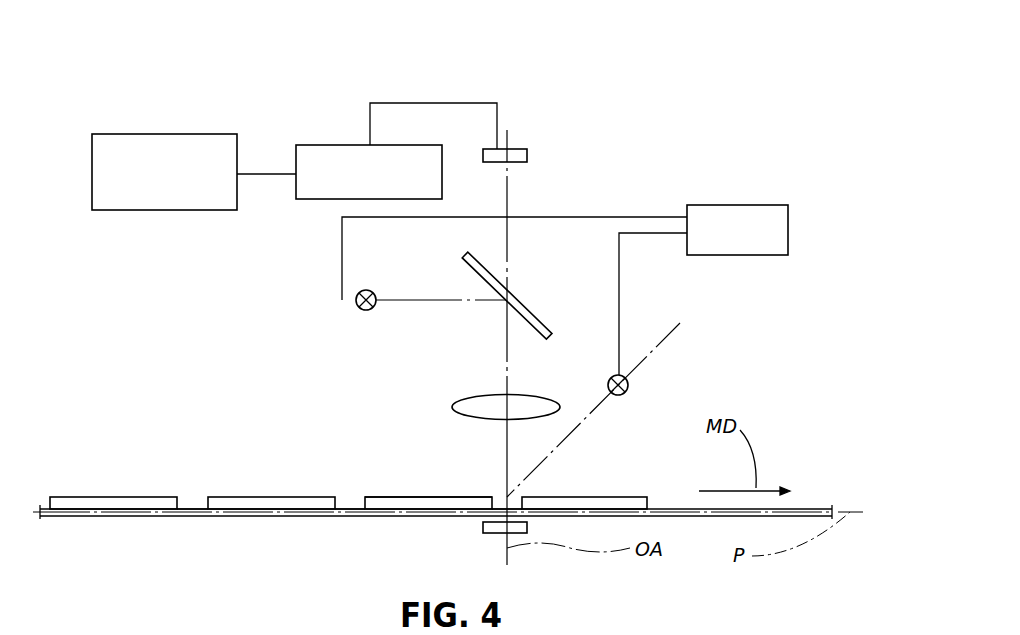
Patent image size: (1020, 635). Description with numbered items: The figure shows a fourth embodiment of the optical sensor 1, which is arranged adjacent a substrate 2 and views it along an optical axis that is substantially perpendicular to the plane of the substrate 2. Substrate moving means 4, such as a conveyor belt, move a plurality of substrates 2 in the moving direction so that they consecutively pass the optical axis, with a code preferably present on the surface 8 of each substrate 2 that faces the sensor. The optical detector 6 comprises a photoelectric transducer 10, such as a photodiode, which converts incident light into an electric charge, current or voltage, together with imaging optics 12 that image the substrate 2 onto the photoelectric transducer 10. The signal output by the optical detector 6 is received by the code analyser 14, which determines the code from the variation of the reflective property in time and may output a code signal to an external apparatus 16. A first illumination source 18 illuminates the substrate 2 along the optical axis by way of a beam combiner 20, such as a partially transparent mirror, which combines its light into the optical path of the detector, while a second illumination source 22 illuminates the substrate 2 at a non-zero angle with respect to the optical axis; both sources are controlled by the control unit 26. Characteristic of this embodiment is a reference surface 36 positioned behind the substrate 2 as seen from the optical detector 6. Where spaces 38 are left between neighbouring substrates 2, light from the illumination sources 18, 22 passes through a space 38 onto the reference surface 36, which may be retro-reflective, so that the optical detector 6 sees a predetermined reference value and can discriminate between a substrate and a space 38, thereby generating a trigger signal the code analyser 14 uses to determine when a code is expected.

The optical sensor 1 is at (697, 96).
The substrate 2 is at (127, 503).
The substrate moving means 4 is at (322, 517).
The optical detector 6 is at (557, 130).
The surface of the substrate 8 is at (375, 497).
The photoelectric transducer 10 is at (514, 149).
The imaging optics 12 is at (456, 404).
The code analyser 14 is at (308, 145).
The external apparatus 16 is at (223, 134).
The first illumination source 18 is at (358, 308).
The beam combiner 20 is at (465, 256).
The second illumination source 22 is at (628, 386).
The control unit 26 is at (788, 226).
The reference surface 36 is at (484, 535).
The space 38 is at (192, 501).